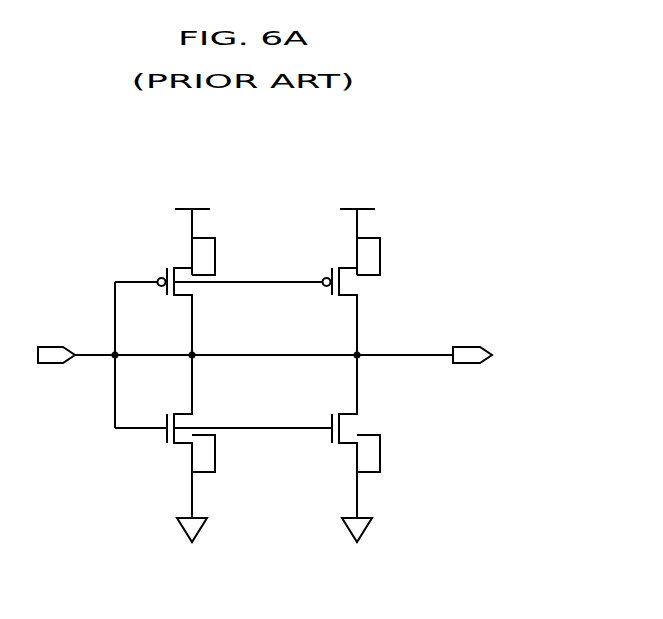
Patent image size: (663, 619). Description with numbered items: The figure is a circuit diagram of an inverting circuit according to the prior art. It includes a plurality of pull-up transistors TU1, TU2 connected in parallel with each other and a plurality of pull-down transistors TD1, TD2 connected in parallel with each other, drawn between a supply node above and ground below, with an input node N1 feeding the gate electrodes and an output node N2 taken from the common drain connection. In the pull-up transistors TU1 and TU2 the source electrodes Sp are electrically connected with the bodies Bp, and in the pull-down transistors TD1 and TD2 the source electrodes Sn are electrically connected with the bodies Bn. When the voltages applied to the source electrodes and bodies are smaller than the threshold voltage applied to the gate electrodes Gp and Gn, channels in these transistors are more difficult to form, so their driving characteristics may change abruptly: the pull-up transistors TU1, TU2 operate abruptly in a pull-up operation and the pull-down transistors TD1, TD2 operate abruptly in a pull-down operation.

The pull-up transistor TU1 is at (160, 252).
The pull-down transistor TD1 is at (162, 452).
The pull-up transistor TU2 is at (325, 252).
The pull-down transistor TD2 is at (327, 452).
The first node (input) N1 is at (51, 342).
The second node (output) N2 is at (480, 342).